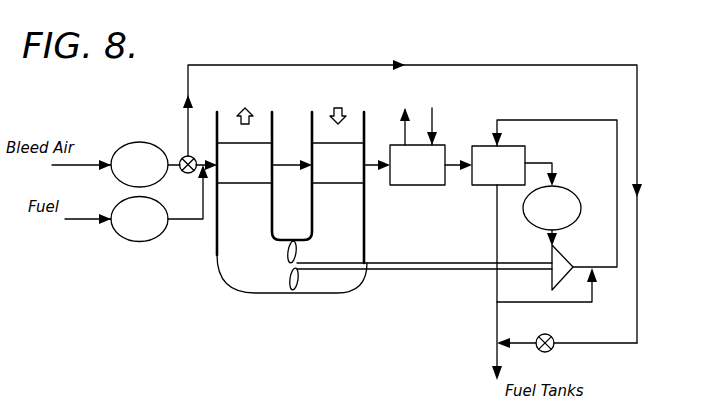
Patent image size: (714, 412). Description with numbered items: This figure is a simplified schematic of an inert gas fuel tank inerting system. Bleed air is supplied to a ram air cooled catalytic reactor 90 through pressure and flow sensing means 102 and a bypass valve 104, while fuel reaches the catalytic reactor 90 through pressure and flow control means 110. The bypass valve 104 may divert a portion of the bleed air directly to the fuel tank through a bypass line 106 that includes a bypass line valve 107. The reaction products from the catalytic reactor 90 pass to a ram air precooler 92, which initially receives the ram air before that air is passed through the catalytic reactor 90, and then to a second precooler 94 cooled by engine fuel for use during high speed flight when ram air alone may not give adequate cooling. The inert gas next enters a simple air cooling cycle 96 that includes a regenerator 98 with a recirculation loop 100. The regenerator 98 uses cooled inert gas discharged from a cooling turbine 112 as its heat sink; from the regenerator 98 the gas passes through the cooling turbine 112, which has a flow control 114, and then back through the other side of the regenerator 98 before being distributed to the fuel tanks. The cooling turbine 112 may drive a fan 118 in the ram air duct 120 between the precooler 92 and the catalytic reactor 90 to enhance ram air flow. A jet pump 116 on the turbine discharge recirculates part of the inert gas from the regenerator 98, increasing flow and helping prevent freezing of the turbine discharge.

The catalytic reactor 90 is at (312, 169).
The ram air precooler 92 is at (345, 185).
The precooler 94 is at (424, 186).
The simple air cooling cycle 96 is at (590, 158).
The regenerator 98 is at (528, 152).
The recirculation loop 100 is at (588, 120).
The pressure and flow sensing means 102 is at (152, 142).
The bypass valve 104 is at (191, 155).
The bypass line 106 is at (502, 64).
The bypass line valve 107 is at (550, 334).
The pressure and flow control means 110 is at (135, 241).
The cooling turbine 112 is at (566, 257).
The flow control 114 is at (578, 201).
The jet pump 116 is at (598, 262).
The fan 118 is at (290, 285).
The ram air duct 120 is at (218, 252).